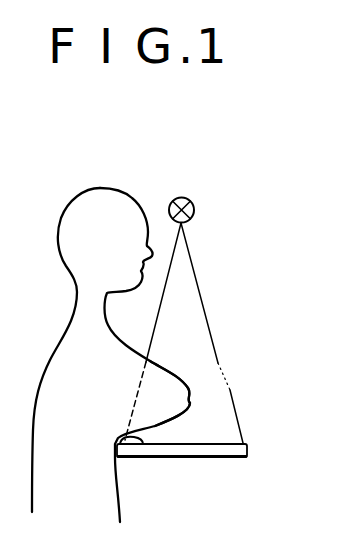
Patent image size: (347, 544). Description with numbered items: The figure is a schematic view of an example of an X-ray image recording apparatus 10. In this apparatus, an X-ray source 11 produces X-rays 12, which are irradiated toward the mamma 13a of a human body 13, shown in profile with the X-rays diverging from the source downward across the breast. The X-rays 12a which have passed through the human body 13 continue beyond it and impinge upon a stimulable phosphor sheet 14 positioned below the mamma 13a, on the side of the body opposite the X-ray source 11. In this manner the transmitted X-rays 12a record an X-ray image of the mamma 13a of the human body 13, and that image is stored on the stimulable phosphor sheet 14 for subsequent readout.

The X-ray image recording apparatus 10 is at (242, 247).
The X-ray source 11 is at (194, 206).
The X-rays 12 is at (204, 306).
The X-rays which have passed through the human body 12a is at (134, 458).
The human body 13 is at (100, 200).
The mamma 13a is at (163, 392).
The stimulable phosphor sheet 14 is at (218, 454).